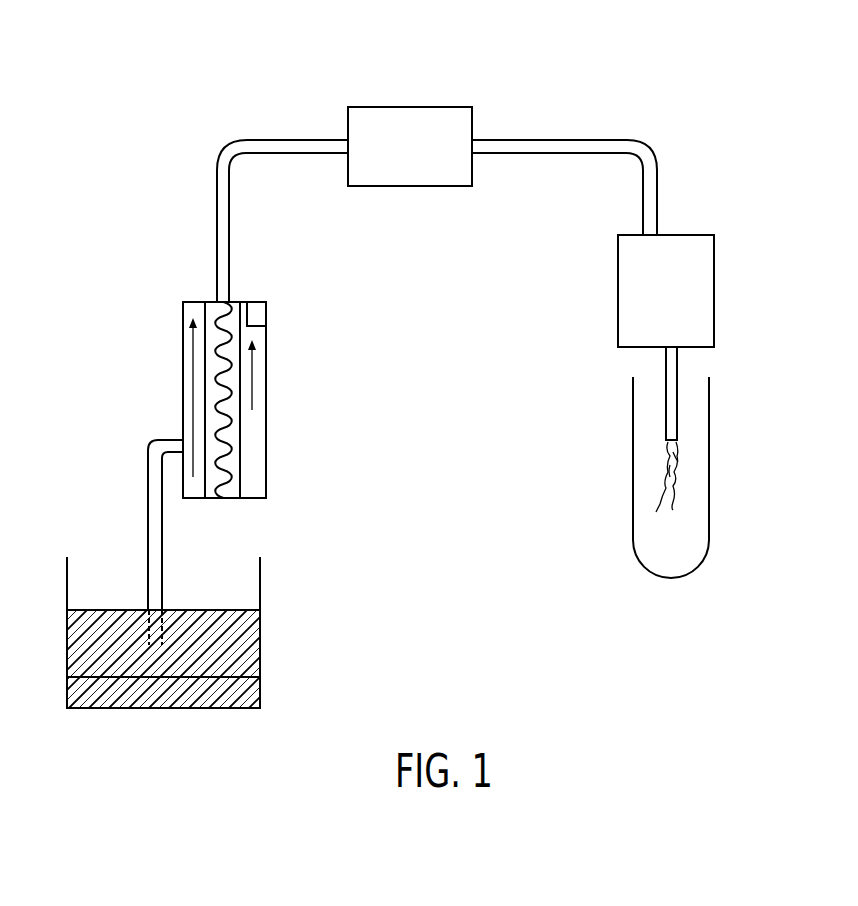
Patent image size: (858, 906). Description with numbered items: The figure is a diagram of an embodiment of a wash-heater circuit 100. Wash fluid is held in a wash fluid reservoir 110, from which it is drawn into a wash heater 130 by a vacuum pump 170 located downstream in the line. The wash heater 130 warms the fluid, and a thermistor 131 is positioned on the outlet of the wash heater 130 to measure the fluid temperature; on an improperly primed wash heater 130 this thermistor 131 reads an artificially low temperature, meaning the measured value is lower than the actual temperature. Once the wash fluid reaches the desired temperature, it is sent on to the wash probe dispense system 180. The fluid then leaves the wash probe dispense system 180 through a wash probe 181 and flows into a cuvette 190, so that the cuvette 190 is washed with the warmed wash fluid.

The wash-heater circuit 100 is at (782, 104).
The wash fluid reservoir 110 is at (261, 658).
The wash heater 130 is at (231, 391).
The thermistor 131 is at (267, 311).
The vacuum pump 170 is at (410, 106).
The wash probe dispense system 180 is at (715, 292).
The wash probe 181 is at (678, 388).
The cuvette 190 is at (710, 523).